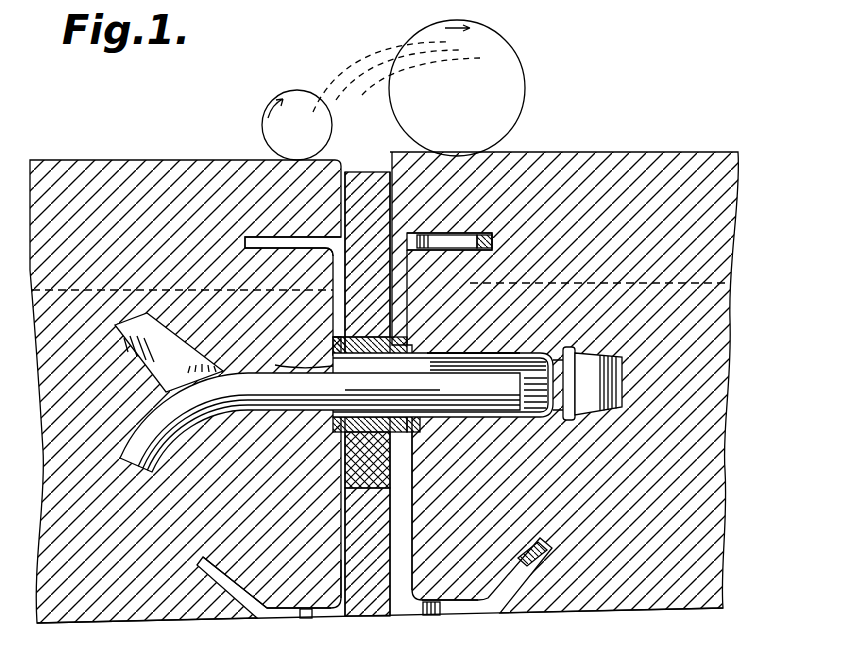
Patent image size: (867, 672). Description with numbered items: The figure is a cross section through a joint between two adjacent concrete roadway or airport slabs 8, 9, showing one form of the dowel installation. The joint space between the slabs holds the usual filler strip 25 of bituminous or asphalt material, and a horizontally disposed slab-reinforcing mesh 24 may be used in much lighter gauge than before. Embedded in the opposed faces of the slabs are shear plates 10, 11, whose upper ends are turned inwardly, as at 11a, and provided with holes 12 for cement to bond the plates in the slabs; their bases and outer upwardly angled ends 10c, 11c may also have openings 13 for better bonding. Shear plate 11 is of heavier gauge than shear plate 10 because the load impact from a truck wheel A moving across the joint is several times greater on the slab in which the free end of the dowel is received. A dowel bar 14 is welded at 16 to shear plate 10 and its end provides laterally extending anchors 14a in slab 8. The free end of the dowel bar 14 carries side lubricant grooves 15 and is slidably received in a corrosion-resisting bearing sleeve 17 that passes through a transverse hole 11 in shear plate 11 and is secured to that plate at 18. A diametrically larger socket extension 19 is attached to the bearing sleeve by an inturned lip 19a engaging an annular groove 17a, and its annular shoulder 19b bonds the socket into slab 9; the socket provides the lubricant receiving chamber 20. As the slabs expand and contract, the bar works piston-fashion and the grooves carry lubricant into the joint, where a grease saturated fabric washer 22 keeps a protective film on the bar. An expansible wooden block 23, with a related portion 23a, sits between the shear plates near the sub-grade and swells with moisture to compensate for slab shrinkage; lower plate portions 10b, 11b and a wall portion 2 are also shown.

The slab 8 is at (47, 172).
The slab 9 is at (712, 168).
The slab-reinforcing mesh 24 is at (381, 261).
The holes 12 is at (276, 234).
The inturned upper end of shear plate 11a is at (480, 238).
The wall panel 2 is at (413, 322).
The filler strip 25 is at (366, 172).
The expansible wooden block 23 is at (375, 455).
The packing 23a is at (360, 335).
The bearing sleeve 17 is at (415, 337).
The weld 16 is at (335, 428).
The securement of bearing sleeve 18 is at (420, 428).
The laterally extending anchors 14a is at (137, 468).
The lubricant grooves 15 is at (490, 418).
The dowel bar 14 is at (262, 398).
The annular groove 17a is at (385, 390).
The circumferential inturned lip 19a is at (430, 353).
The socket extension 19 is at (527, 420).
The annular shoulder 19b is at (578, 350).
The lubricant receiving chamber 20 is at (523, 382).
The grease saturated fabric washer 22 is at (293, 360).
The shear plate 10 is at (342, 547).
The bottom channel 10b is at (298, 619).
The upwardly angled end of shear plate 10c is at (203, 560).
The openings 13 is at (310, 614).
The shear plate 11 is at (440, 480).
The bottom channel 11b is at (470, 616).
The upwardly angled end of shear plate 11c is at (510, 597).
The truck wheel A is at (293, 90).